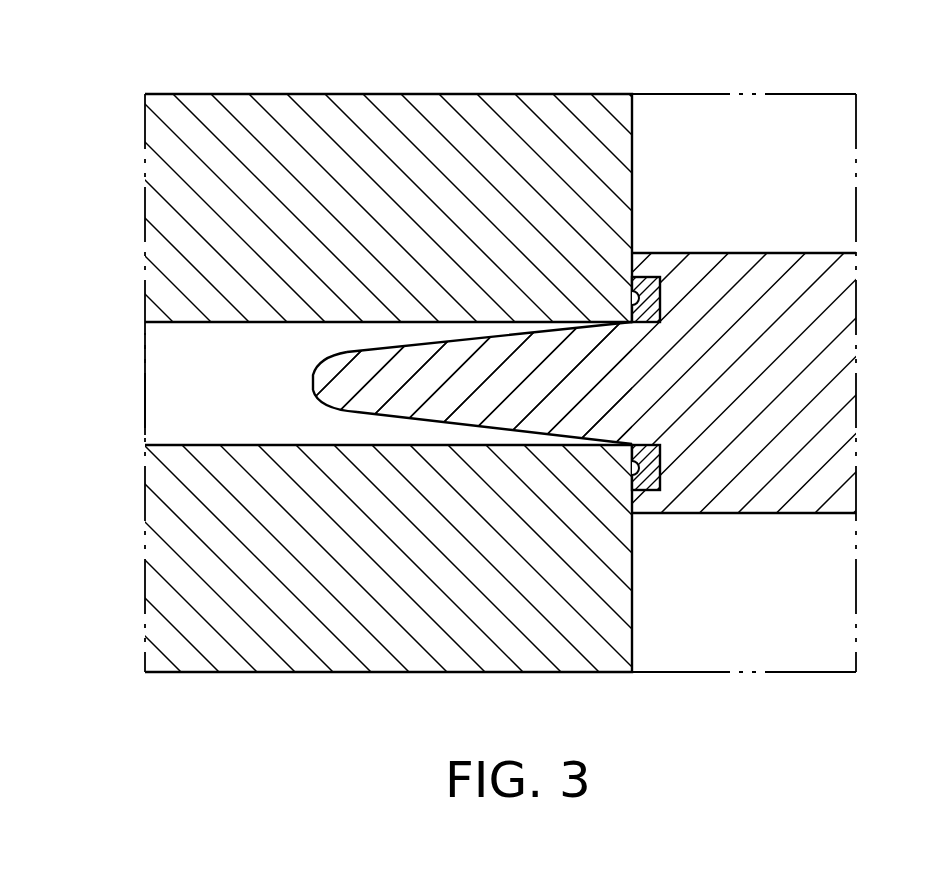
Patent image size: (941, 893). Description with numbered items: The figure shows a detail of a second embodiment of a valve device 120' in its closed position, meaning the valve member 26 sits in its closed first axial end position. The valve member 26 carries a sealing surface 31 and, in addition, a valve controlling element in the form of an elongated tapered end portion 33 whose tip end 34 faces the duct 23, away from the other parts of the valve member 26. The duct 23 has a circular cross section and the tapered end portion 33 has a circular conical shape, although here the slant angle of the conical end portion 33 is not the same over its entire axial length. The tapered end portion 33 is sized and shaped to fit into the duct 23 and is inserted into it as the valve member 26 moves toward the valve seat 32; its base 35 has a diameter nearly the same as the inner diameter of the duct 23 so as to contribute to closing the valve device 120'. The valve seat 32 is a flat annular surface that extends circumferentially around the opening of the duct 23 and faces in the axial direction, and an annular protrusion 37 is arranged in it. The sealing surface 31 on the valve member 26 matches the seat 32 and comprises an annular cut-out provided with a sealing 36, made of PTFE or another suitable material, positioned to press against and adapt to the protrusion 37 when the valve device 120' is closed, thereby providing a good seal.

The valve device 120' is at (470, 438).
The duct 23 is at (242, 407).
The valve member 26 is at (770, 380).
The sealing surface 31 is at (628, 271).
The valve seat 32 is at (636, 263).
The tapered end portion 33 is at (480, 375).
The tip end 34 is at (313, 383).
The base 35 is at (622, 380).
The sealing 36 is at (647, 468).
The annular protrusion 37 is at (630, 467).